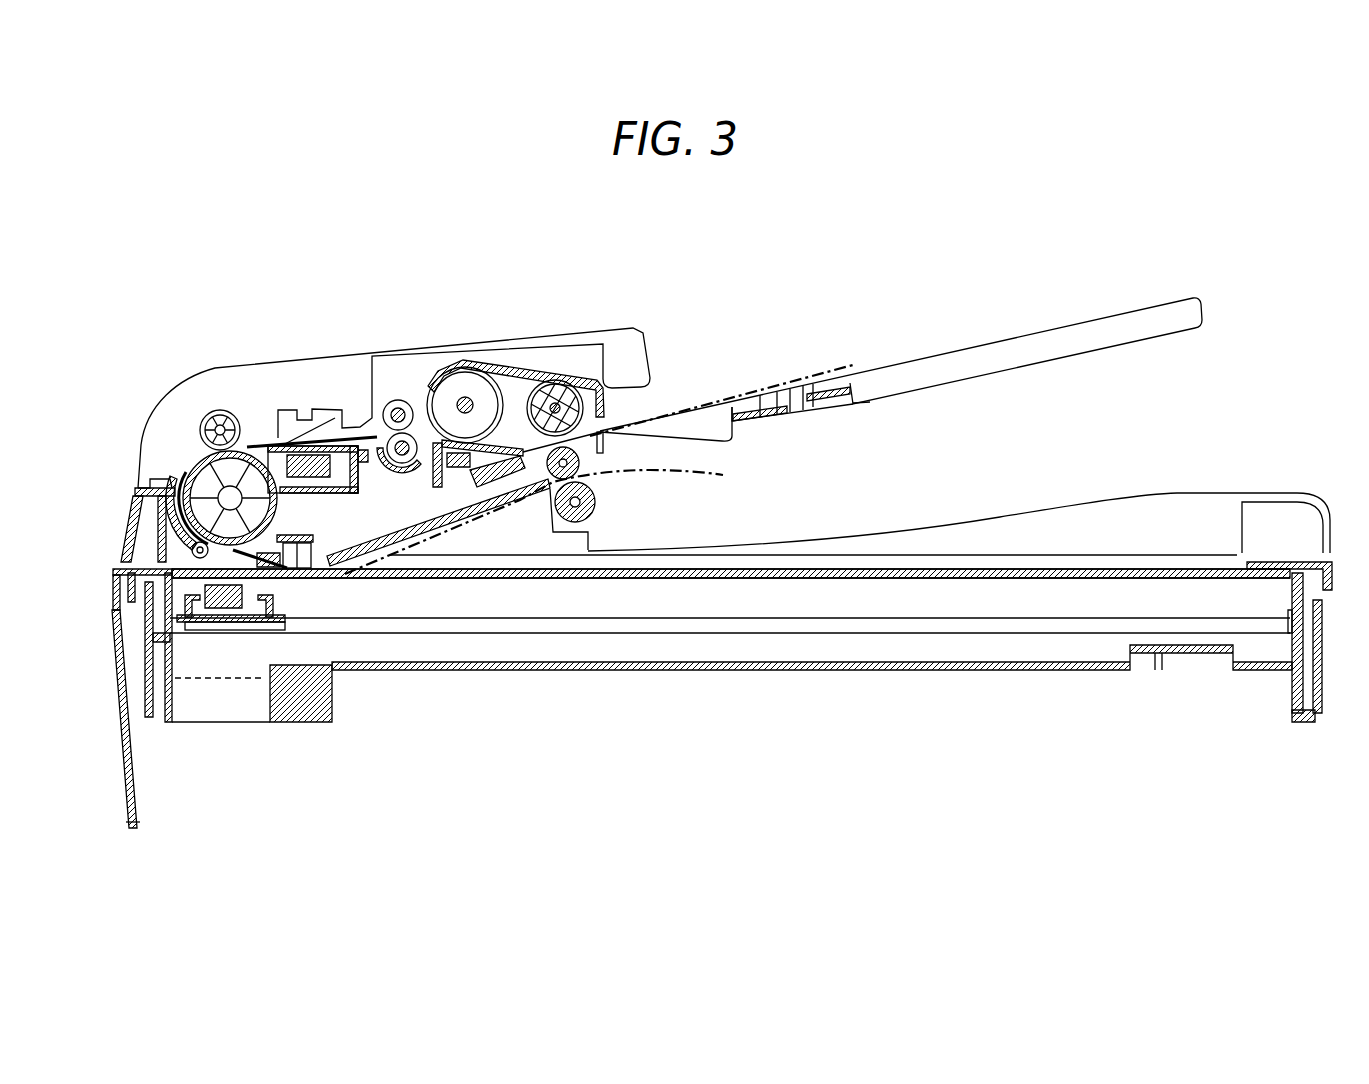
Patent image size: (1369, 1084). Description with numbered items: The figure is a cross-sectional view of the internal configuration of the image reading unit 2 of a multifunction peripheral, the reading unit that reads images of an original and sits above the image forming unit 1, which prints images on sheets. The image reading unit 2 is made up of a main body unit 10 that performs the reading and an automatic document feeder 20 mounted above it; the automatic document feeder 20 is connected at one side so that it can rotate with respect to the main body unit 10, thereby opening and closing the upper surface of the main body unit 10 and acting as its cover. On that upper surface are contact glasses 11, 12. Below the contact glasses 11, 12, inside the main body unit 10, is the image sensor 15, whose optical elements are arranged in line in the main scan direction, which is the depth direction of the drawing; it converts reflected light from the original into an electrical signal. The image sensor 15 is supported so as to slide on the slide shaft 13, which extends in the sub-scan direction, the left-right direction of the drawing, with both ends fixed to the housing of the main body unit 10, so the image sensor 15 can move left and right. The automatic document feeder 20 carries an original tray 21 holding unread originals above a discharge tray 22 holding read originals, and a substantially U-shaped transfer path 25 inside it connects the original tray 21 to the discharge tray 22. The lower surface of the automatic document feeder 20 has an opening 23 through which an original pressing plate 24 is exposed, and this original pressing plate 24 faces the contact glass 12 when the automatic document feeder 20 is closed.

The image forming unit 1 is at (95, 727).
The image reading unit 2 is at (52, 455).
The main body unit 10 is at (95, 572).
The contact glass 11 is at (610, 582).
The contact glass 12 is at (294, 582).
The slide shaft 13 is at (698, 626).
The image sensor 15 is at (240, 610).
The automatic document feeder 20 is at (95, 362).
The original tray 21 is at (1023, 336).
The discharge tray 22 is at (1027, 516).
The opening 23 is at (330, 556).
The original pressing plate 24 is at (307, 540).
The transfer path 25 is at (783, 380).